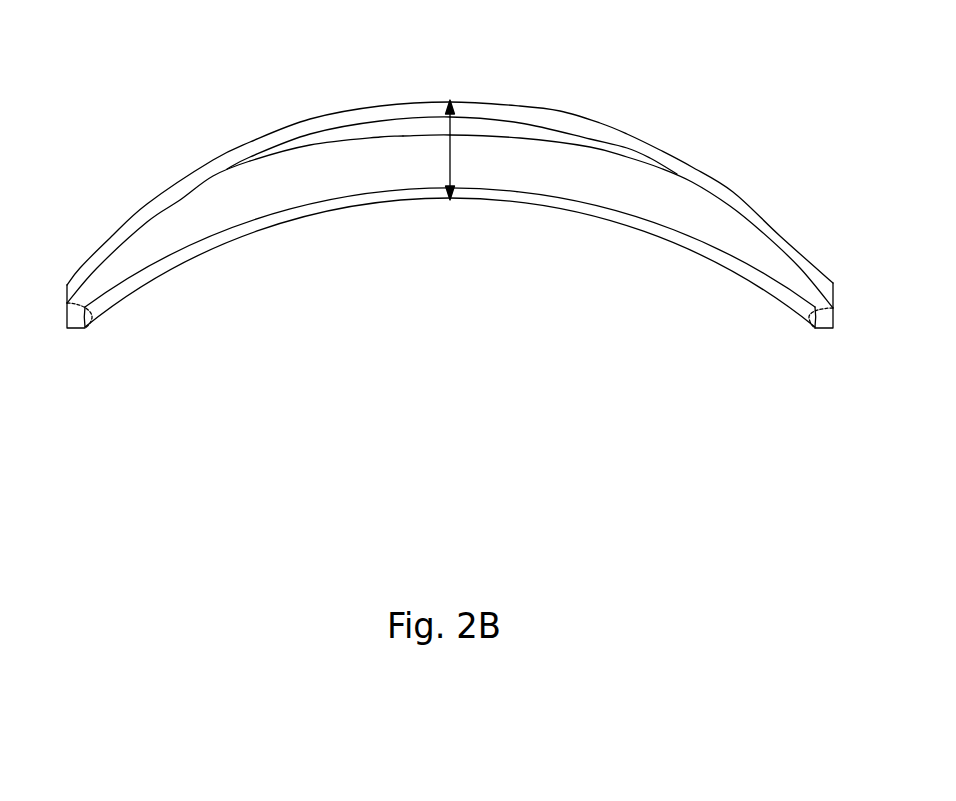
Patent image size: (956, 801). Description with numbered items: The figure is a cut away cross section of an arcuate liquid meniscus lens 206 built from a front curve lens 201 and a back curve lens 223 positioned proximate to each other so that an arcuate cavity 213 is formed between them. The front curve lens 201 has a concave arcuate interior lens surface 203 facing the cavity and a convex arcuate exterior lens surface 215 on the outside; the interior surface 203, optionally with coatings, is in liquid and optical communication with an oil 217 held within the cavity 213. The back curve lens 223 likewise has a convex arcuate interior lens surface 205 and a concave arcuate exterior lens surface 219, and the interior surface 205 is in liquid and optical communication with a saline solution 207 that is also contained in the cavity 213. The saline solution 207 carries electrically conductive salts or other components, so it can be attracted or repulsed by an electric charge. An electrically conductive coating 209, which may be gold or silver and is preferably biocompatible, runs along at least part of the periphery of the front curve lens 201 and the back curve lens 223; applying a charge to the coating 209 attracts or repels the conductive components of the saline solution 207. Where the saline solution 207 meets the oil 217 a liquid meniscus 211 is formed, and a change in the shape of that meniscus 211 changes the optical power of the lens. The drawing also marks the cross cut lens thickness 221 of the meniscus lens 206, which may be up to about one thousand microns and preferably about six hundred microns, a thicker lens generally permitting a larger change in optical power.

The front curve lens 201 is at (725, 198).
The concave arcuate interior lens surface 203 is at (281, 150).
The convex arcuate interior lens surface 205 is at (223, 233).
The liquid meniscus lens 206 is at (437, 245).
The saline solution 207 is at (518, 180).
The electrically conductive coating 209 is at (82, 314).
The liquid meniscus 211 is at (402, 140).
The arcuate cavity 213 is at (226, 209).
The convex arcuate exterior lens surface 215 is at (412, 99).
The oil 217 is at (466, 130).
The concave arcuate exterior lens surface 219 is at (336, 210).
The lens thickness 221 is at (449, 140).
The back curve lens 223 is at (551, 201).